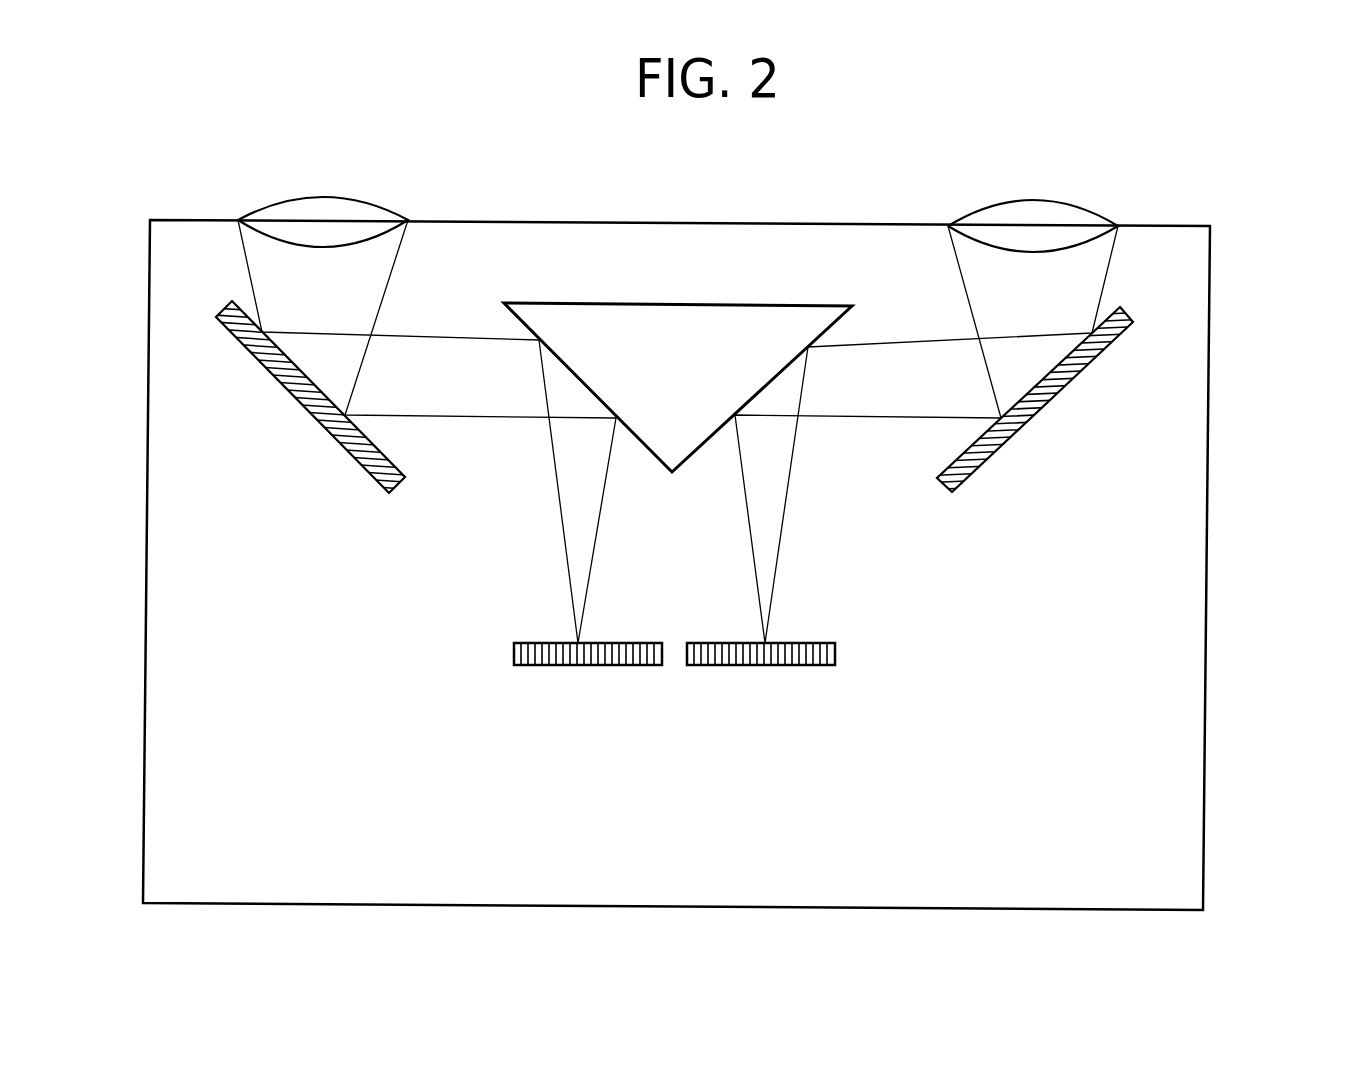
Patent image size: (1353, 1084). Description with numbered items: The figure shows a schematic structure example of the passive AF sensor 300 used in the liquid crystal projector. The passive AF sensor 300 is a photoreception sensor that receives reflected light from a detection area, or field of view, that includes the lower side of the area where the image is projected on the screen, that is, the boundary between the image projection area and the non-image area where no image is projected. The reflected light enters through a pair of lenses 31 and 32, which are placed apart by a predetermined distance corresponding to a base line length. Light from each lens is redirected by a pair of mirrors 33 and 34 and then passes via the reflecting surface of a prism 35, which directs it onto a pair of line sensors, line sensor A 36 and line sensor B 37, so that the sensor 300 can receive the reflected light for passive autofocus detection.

The passive AF sensor 300 is at (1200, 563).
The lens 31 is at (315, 200).
The lens 32 is at (1022, 218).
The mirror 33 is at (323, 423).
The mirror 34 is at (990, 457).
The prism 35 is at (685, 320).
The line sensor A 36 is at (600, 670).
The line sensor B 37 is at (748, 668).